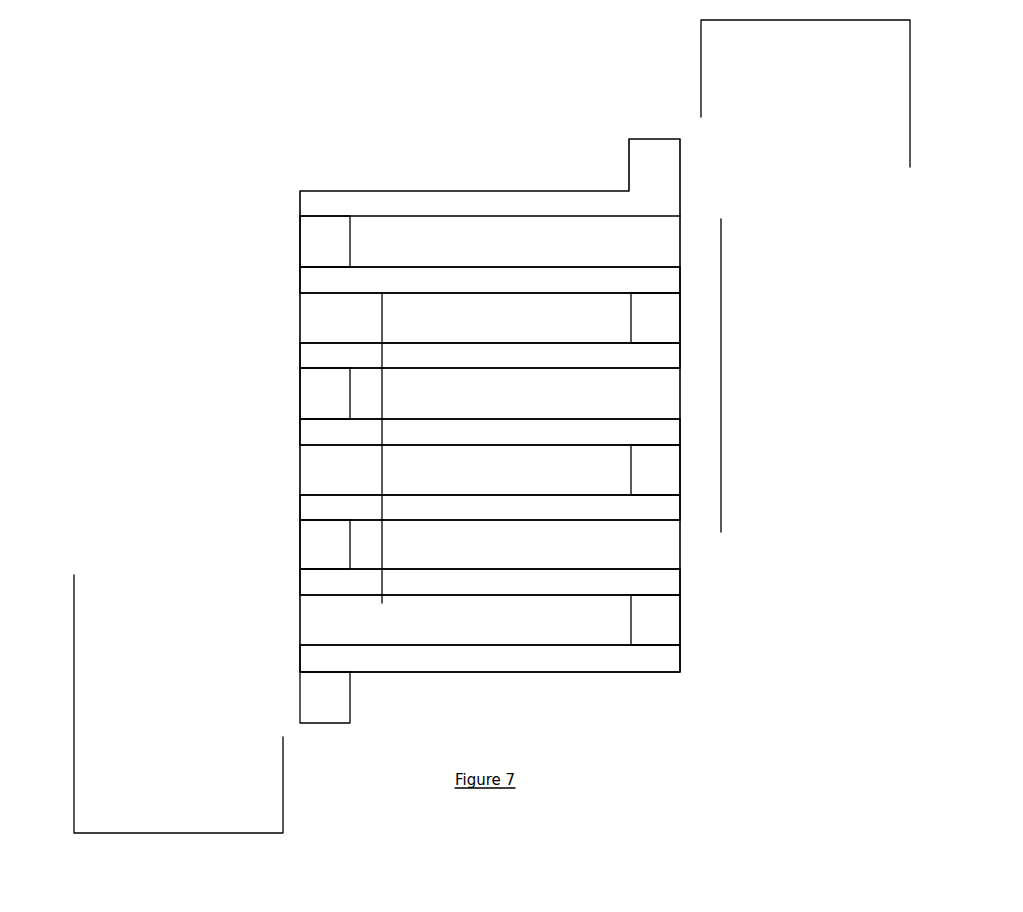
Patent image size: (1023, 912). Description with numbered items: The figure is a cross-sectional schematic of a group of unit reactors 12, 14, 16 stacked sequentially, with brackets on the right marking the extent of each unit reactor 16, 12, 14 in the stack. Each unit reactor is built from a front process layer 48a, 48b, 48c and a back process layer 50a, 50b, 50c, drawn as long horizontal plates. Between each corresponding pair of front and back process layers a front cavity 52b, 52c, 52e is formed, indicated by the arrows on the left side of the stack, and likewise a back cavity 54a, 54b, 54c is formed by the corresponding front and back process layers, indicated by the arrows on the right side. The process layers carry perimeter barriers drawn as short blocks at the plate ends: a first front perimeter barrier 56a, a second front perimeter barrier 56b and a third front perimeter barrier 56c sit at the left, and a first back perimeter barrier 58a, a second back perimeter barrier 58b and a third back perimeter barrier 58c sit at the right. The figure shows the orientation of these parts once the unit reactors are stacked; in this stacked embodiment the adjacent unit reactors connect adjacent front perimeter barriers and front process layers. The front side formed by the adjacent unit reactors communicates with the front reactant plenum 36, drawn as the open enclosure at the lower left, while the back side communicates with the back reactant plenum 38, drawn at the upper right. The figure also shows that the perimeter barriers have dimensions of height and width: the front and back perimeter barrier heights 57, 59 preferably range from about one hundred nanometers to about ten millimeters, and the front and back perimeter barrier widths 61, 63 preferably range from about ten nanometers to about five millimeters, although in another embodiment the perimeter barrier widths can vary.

The unit reactor 12 is at (910, 379).
The unit reactor 14 is at (910, 506).
The unit reactor 16 is at (910, 194).
The front reactant plenum 36 is at (195, 815).
The back reactant plenum 38 is at (885, 88).
The front process layer 48a is at (310, 510).
The front process layer 48b is at (305, 665).
The front process layer 48c is at (305, 360).
The back process layer 50a is at (677, 431).
The back process layer 50b is at (680, 585).
The back process layer 50c is at (668, 283).
The front cavity 52b is at (299, 626).
The front cavity 52c is at (298, 326).
The electrolyte gap a 52e is at (302, 490).
The back cavity 54a is at (677, 399).
The back cavity 54b is at (683, 562).
The back cavity 54c is at (691, 243).
The first front perimeter barrier 56a is at (310, 433).
The second front perimeter barrier 56b is at (310, 545).
The third front perimeter barrier 56c is at (305, 243).
The front perimeter barrier height 57 is at (770, 600).
The first back perimeter barrier 58a is at (663, 465).
The second back perimeter barrier 58b is at (670, 625).
The third back perimeter barrier 58c is at (672, 330).
The back perimeter barrier height 59 is at (366, 675).
The front perimeter barrier width 61 is at (631, 686).
The back perimeter barrier width 63 is at (300, 738).